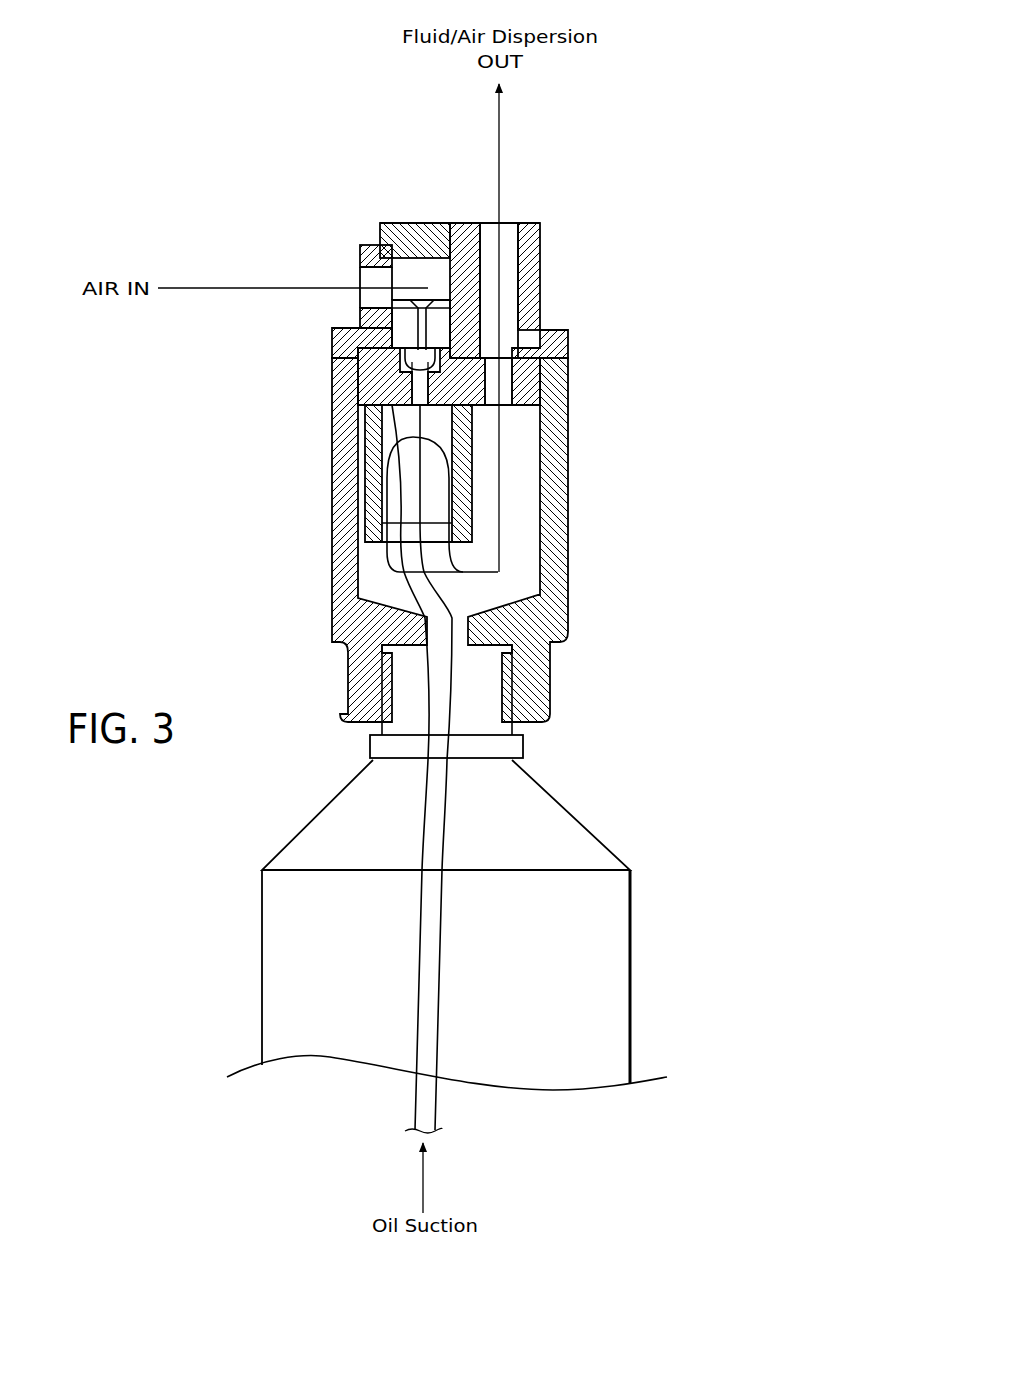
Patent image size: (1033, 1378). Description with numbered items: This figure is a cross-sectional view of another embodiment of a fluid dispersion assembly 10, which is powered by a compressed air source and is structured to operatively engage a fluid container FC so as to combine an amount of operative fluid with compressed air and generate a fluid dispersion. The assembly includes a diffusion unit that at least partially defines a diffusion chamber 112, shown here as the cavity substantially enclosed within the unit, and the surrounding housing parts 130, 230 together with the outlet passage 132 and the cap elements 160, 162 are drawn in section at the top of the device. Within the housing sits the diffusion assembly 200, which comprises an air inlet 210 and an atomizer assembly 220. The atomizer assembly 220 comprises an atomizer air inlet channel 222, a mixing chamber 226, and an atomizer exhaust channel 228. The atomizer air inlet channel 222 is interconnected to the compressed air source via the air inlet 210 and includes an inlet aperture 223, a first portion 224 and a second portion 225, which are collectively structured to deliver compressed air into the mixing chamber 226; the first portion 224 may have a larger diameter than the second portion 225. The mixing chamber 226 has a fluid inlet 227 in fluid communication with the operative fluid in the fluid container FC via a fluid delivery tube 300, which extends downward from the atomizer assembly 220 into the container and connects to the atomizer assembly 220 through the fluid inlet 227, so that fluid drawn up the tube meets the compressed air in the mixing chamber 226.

The fluid dispersion assembly 10 is at (223, 115).
The diffusion chamber 112 is at (513, 573).
The housing 130 is at (530, 250).
The outlet passage 132 is at (522, 216).
The cap 160 is at (397, 218).
The cap body 162 is at (432, 222).
The diffusion assembly 200 is at (323, 245).
The air inlet 210 is at (342, 270).
The atomizer assembly 220 is at (406, 335).
The atomizer air inlet channel 222 is at (401, 294).
The inlet aperture 223 is at (427, 289).
The first portion 224 is at (416, 312).
The second portion 225 is at (445, 360).
The mixing chamber 226 is at (484, 360).
The fluid inlet 227 is at (410, 360).
The atomizer exhaust channel 228 is at (430, 402).
The housing body 230 is at (356, 475).
The fluid delivery tube 300 is at (432, 970).
The fluid container FC is at (633, 1013).